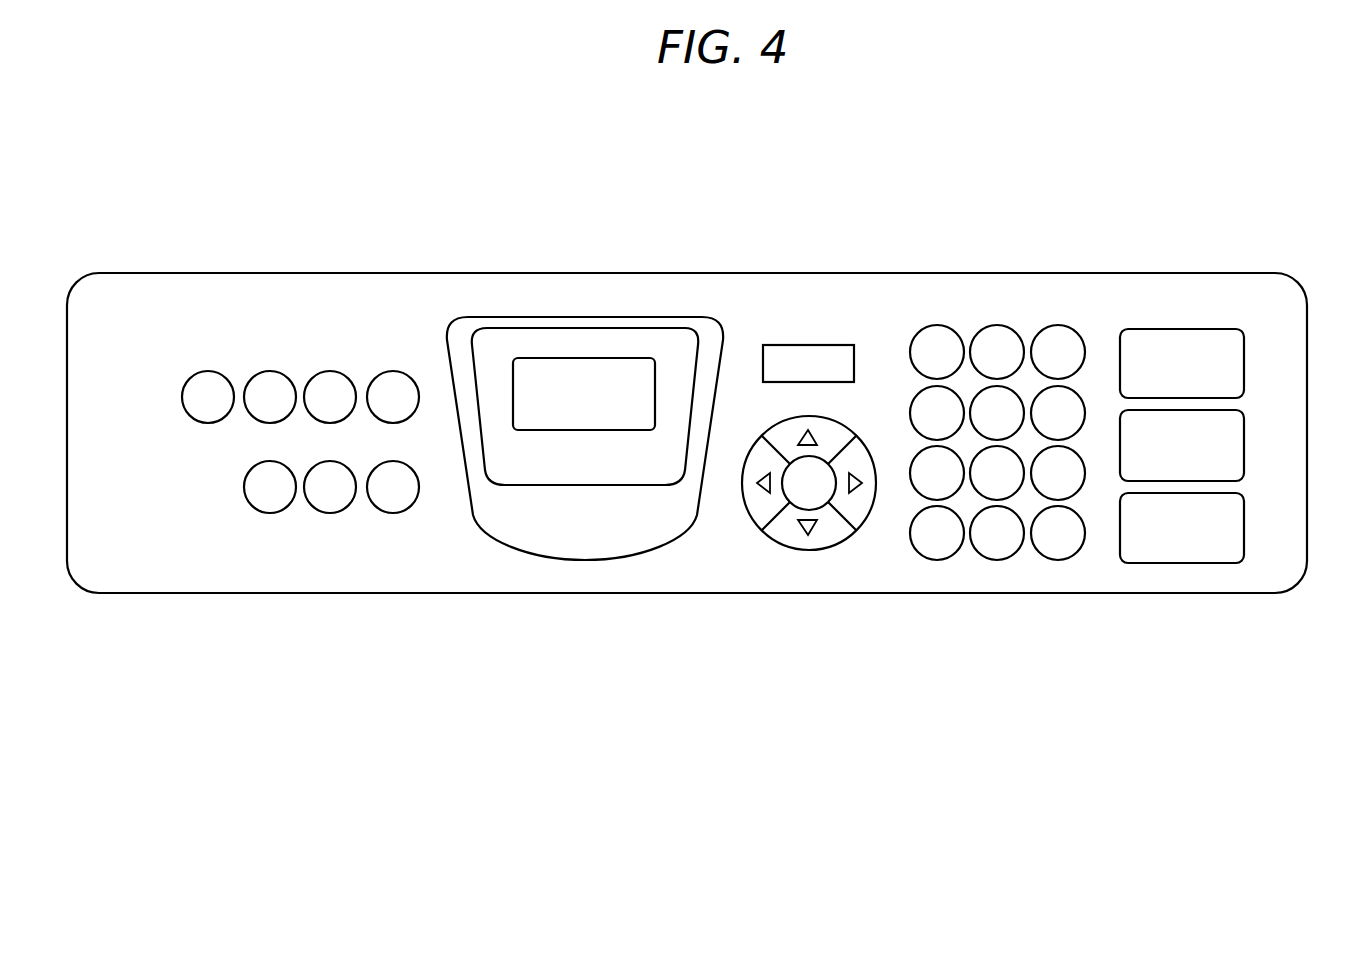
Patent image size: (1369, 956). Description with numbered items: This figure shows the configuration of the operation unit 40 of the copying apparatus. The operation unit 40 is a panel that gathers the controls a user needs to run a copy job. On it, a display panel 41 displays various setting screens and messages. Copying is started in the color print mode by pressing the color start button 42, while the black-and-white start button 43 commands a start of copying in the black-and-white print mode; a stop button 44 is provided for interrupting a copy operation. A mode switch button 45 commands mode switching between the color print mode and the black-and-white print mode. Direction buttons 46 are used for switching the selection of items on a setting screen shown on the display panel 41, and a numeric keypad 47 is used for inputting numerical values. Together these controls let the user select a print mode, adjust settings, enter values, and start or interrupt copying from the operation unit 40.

The operation unit 40 is at (303, 273).
The display panel 41 is at (565, 367).
The color start button 42 is at (1244, 448).
The black-and-white start button 43 is at (1244, 355).
The stop button 44 is at (1244, 527).
The mode switch button 45 is at (812, 345).
The direction buttons 46 is at (797, 537).
The numeric keypad 47 is at (900, 565).